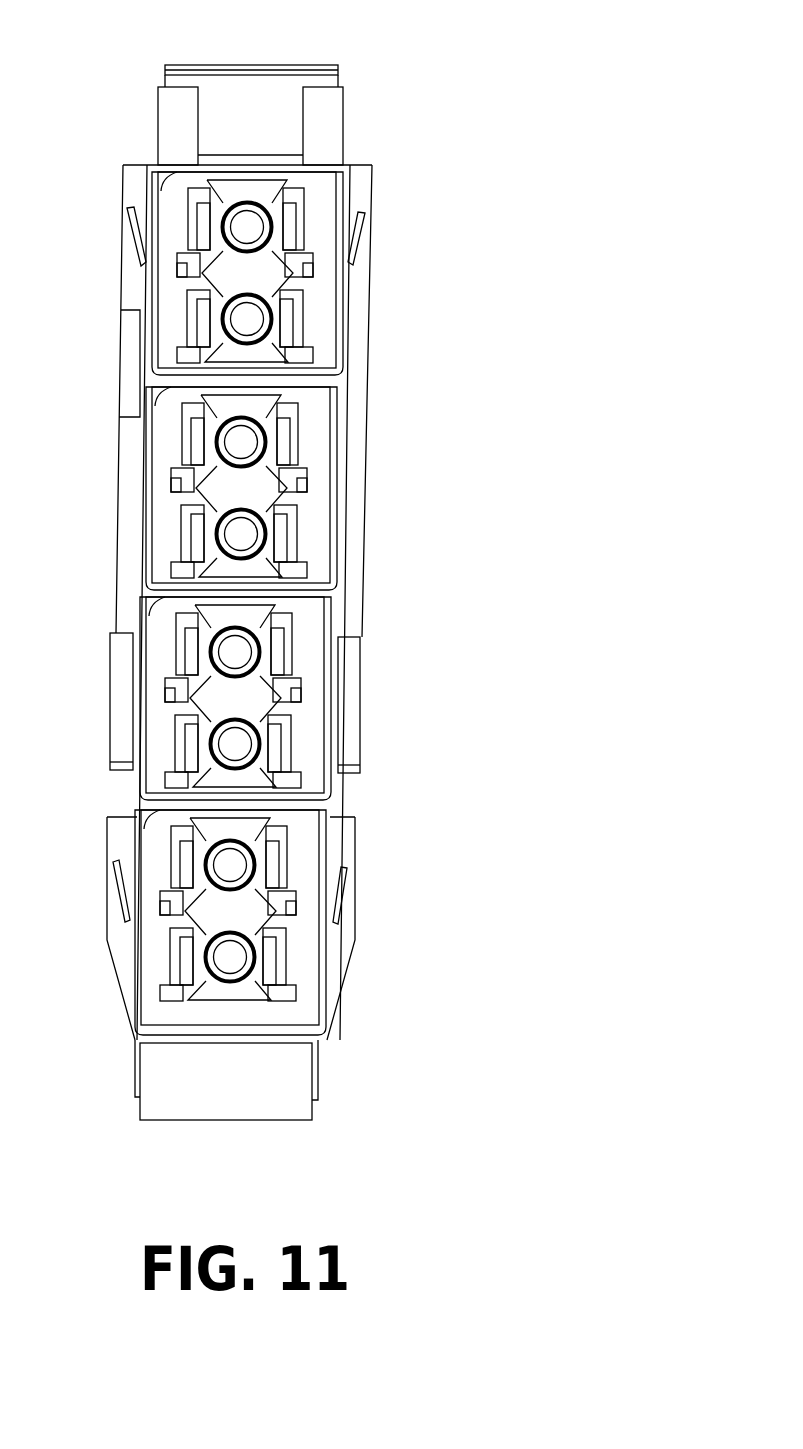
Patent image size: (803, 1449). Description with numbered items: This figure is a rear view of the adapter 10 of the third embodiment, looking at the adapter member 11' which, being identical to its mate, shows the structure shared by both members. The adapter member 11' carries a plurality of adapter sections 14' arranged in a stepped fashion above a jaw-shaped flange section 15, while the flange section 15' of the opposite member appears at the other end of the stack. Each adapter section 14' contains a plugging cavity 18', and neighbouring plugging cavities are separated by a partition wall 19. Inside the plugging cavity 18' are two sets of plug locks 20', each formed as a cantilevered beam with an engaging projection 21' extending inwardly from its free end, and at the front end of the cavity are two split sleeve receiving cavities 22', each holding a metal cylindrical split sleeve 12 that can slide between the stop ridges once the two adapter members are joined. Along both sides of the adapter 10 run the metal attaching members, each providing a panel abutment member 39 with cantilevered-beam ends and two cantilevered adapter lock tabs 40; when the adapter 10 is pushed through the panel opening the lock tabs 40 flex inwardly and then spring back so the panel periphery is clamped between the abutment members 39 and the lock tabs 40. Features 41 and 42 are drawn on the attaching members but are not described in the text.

The adapter 10 is at (202, 45).
The adapter member 11' is at (301, 602).
The split sleeve 12 is at (263, 238).
The adapter section 14' is at (290, 603).
The flange section 15 is at (262, 1080).
The flange section 15' is at (250, 97).
The plugging cavity 18' is at (315, 590).
The partition wall 19 is at (157, 392).
The plug lock 20' is at (241, 583).
The engaging projection 21' is at (239, 537).
The split sleeve receiving cavity 22' is at (330, 507).
The panel abutment member 39 is at (108, 517).
The adapter lock tab 40 is at (130, 235).
The locking tab 41 is at (125, 405).
The side rail segment 42 is at (122, 677).